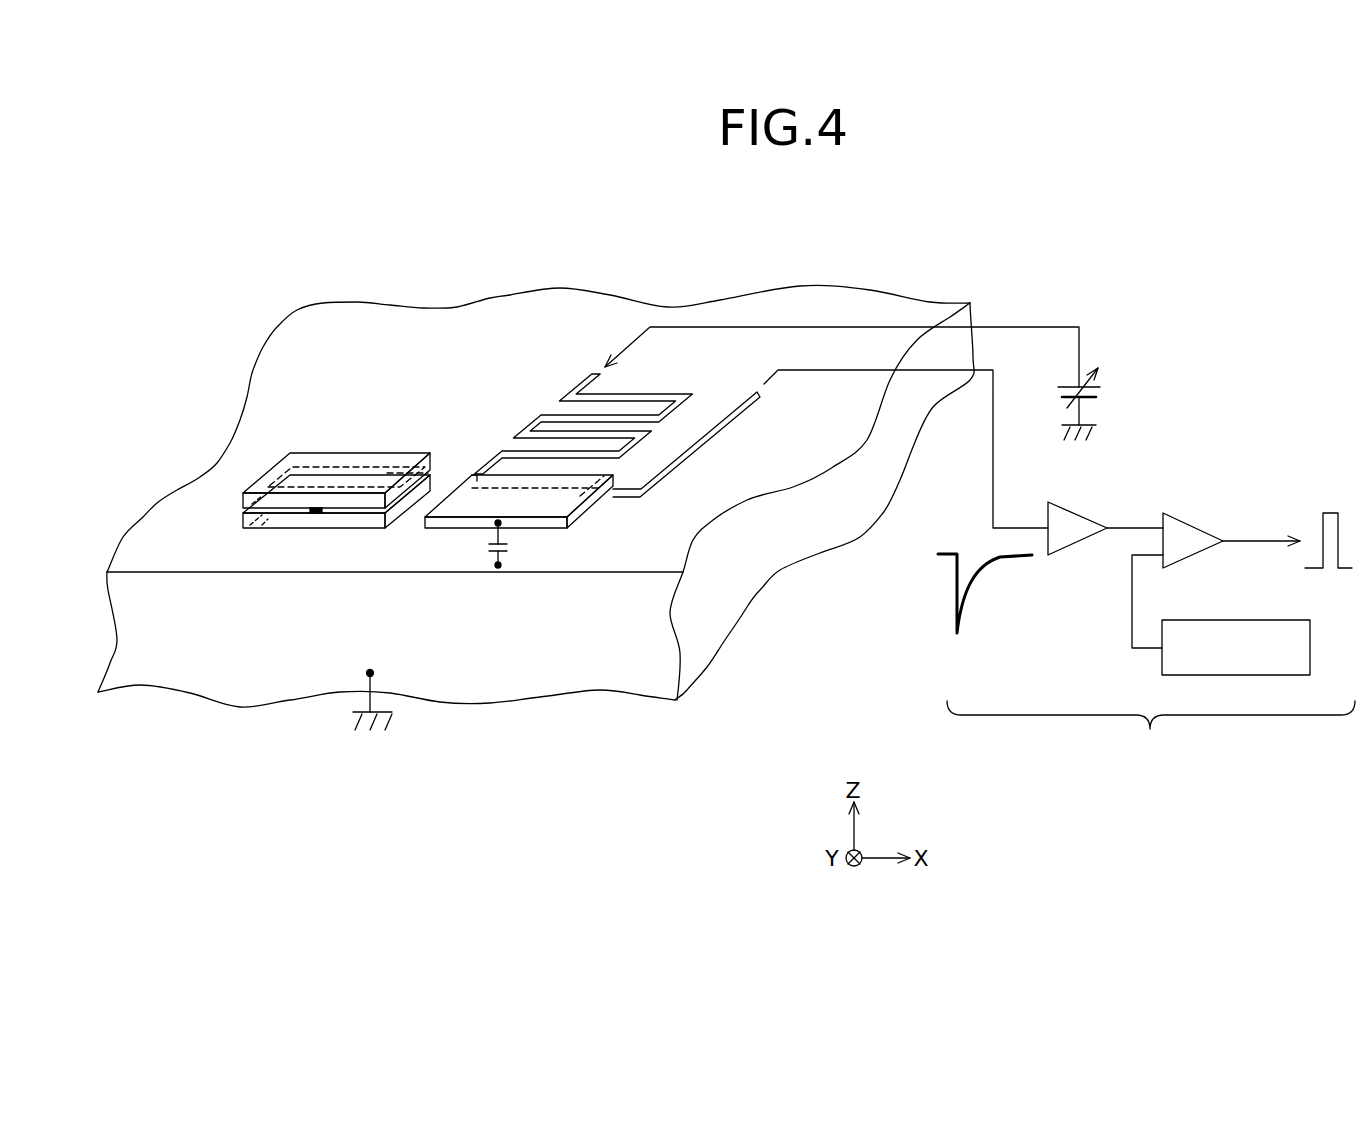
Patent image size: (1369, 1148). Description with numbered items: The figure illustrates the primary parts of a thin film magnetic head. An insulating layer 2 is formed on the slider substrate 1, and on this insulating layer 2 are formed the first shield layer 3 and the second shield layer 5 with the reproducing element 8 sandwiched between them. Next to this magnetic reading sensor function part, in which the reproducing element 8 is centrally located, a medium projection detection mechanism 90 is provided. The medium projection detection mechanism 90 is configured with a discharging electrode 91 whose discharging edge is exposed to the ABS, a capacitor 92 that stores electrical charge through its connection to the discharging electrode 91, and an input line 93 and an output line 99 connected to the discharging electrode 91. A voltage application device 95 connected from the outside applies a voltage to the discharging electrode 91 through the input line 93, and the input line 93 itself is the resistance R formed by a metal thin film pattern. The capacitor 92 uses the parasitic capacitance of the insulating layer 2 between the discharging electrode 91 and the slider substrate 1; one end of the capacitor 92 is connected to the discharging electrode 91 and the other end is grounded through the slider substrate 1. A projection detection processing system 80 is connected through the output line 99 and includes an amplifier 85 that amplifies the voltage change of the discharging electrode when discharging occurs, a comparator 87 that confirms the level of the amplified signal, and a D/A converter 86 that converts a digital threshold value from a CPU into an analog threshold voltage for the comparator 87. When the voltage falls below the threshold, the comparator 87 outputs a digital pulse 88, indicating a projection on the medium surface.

The slider substrate 1 is at (152, 630).
The insulating layer 2 is at (230, 560).
The first shield layer 3 is at (243, 520).
The second shield layer 5 is at (243, 488).
The reproducing element 8 is at (312, 509).
The projection detection processing system 80 is at (1146, 639).
The amplifier 85 is at (1069, 551).
The D/A converter 86 is at (1256, 620).
The comparator 87 is at (1184, 521).
The digital pulse 88 is at (1329, 511).
The medium projection detection mechanism 90 is at (593, 540).
The discharging electrode 91 is at (530, 507).
The capacitor 92 is at (482, 558).
The input line 93 is at (553, 431).
The voltage application device 95 is at (1107, 389).
The output line 99 is at (688, 457).